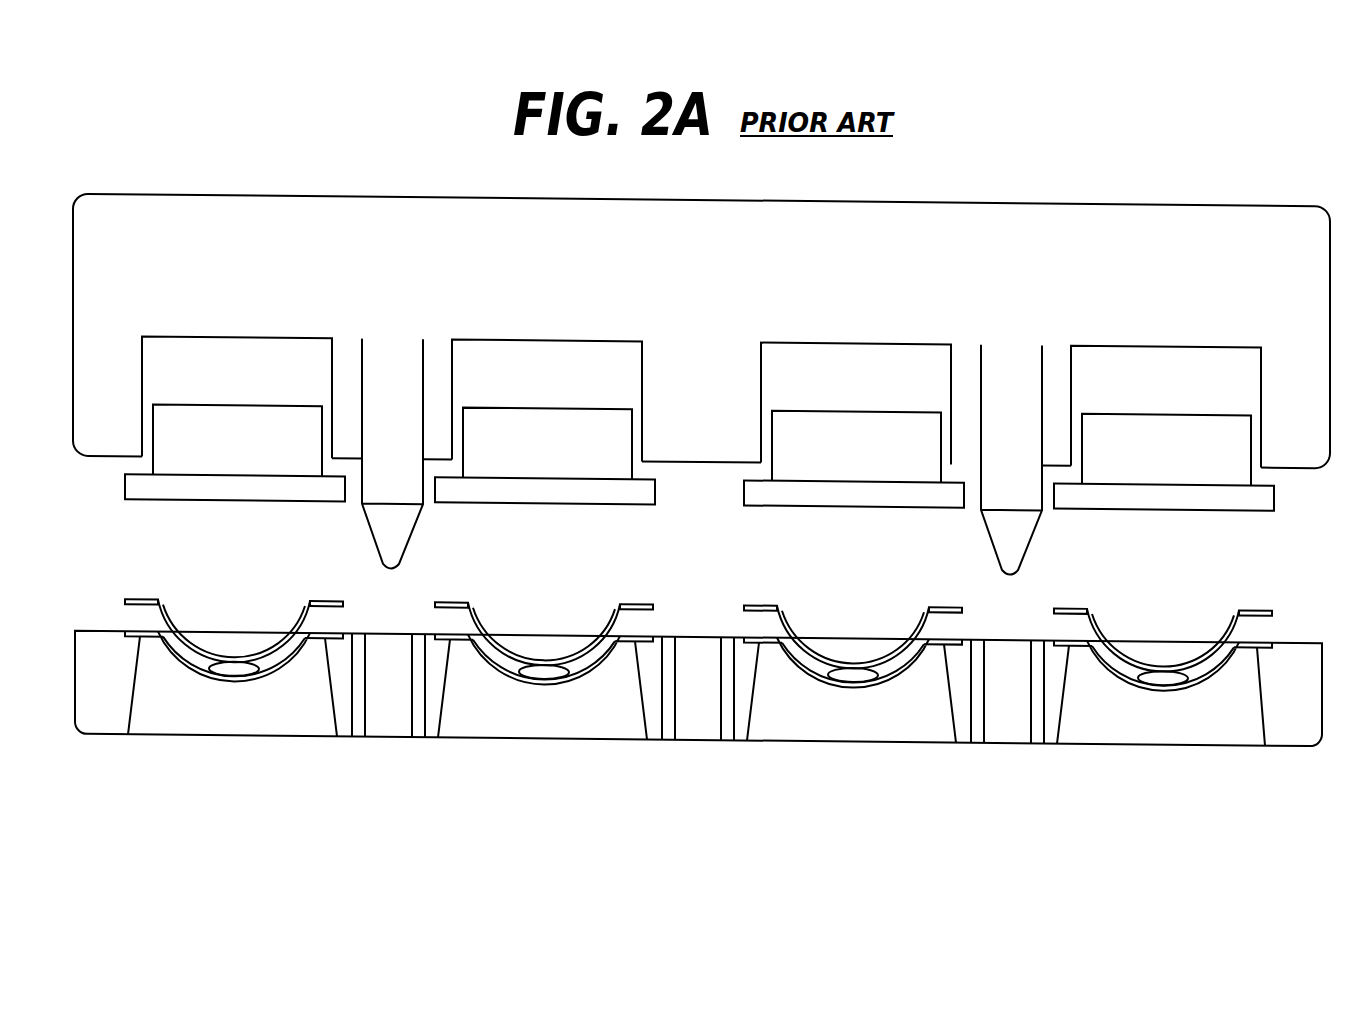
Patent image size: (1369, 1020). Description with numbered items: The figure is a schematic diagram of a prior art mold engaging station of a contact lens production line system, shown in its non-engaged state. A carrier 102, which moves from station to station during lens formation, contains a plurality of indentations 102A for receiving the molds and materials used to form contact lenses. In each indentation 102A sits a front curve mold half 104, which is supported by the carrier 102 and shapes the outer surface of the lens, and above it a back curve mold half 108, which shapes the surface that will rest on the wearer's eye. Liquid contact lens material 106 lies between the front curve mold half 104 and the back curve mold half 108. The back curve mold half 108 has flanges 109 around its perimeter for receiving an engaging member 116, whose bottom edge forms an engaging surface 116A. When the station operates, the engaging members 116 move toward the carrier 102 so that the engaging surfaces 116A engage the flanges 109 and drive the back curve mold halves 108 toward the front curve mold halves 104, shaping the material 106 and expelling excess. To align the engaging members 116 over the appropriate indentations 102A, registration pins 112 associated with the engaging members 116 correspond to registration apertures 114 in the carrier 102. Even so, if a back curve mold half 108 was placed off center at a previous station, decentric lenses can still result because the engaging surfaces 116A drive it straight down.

The carrier 102 is at (690, 742).
The indentations 102A is at (267, 673).
The front curve mold half 104 is at (306, 658).
The liquid contact lens material 106 is at (226, 674).
The back curve mold half 108 is at (147, 598).
The flanges 109 is at (124, 600).
The registration pins 112 is at (381, 549).
The registration apertures 114 is at (386, 722).
The engaging member 116 is at (123, 484).
The engaging surface 116A is at (247, 501).